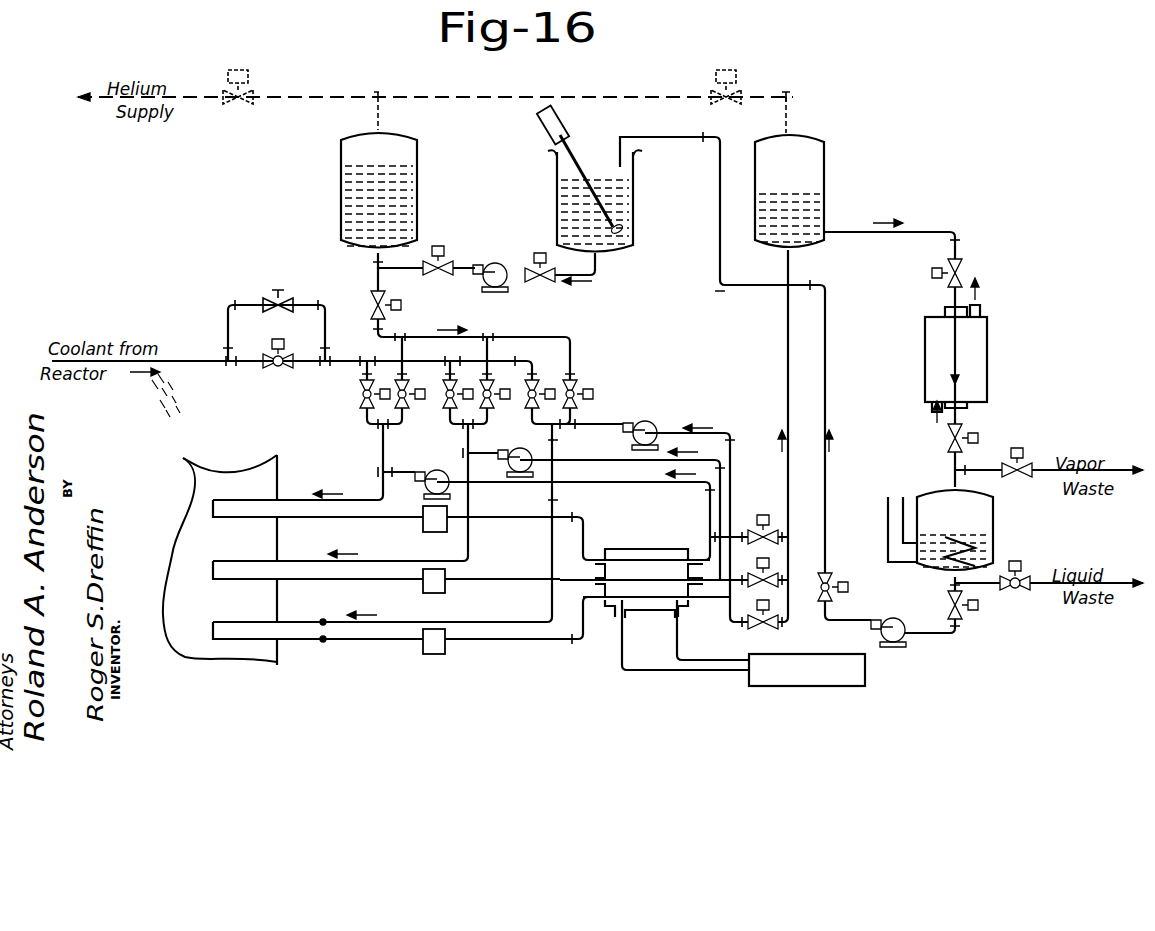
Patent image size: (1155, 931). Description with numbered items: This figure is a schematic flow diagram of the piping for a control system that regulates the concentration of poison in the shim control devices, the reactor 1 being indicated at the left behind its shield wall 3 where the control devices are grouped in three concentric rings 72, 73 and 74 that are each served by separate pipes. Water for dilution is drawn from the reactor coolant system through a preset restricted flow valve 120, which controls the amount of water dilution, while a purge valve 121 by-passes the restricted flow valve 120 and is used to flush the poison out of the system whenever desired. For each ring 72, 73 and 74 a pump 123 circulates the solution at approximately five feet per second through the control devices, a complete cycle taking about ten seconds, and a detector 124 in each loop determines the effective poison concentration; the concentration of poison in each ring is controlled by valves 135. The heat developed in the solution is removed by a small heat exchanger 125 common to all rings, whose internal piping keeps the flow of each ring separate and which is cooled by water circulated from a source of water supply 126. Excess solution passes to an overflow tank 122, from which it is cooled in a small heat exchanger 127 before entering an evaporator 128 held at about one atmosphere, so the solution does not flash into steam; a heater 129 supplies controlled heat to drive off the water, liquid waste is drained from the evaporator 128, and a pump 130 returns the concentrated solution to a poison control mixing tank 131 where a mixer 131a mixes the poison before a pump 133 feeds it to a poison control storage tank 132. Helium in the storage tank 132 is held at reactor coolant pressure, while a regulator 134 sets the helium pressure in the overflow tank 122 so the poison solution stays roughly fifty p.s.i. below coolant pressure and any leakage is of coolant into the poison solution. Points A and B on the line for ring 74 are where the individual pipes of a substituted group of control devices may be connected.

The reactor 1 is at (213, 468).
The reactor shield wall 3 is at (193, 468).
The ring 72 is at (229, 501).
The ring 73 is at (231, 561).
The ring 74 is at (230, 621).
The preset restricted flow valve 120 is at (283, 366).
The purge valve 121 is at (283, 300).
The overflow tank 122 is at (815, 168).
The pump 123 is at (434, 470).
The detector 124 is at (432, 532).
The heat exchanger 125 is at (627, 553).
The source of water supply 126 is at (835, 665).
The heat exchanger 127 is at (980, 350).
The evaporator 128 is at (988, 516).
The heater 129 is at (935, 573).
The pump 130 is at (908, 620).
The poison control mixing tank 131 is at (622, 192).
The mixer 131a is at (578, 165).
The poison control storage tank 132 is at (413, 160).
The pump 133 is at (488, 262).
The regulator 134 is at (748, 88).
The valves 135 is at (362, 396).
The point A is at (320, 613).
The point B is at (321, 651).